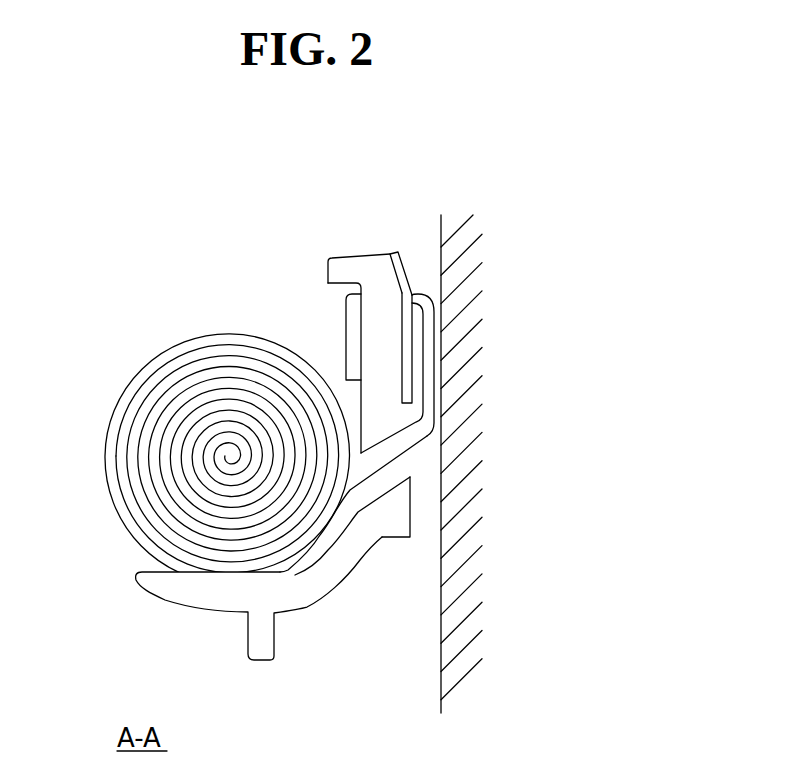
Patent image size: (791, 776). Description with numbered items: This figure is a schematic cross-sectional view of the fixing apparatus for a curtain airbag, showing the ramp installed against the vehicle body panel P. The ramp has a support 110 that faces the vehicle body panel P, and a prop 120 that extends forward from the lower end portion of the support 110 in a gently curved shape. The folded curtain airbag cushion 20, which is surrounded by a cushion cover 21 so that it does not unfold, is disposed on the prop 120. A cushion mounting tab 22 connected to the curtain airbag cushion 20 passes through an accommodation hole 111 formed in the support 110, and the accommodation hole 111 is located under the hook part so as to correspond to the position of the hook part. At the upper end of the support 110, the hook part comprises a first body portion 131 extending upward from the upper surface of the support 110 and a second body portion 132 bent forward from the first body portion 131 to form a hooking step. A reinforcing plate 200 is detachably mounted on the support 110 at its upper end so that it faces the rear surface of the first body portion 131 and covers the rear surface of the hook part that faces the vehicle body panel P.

The curtain airbag cushion 20 is at (162, 477).
The cushion cover 21 is at (163, 357).
The cushion mounting tab 22 is at (437, 352).
The support 110 is at (380, 323).
The accommodation hole 111 is at (384, 493).
The prop 120 is at (182, 592).
The first body portion 131 is at (388, 268).
The second body portion 132 is at (330, 261).
The reinforcing plate 200 is at (407, 256).
The vehicle body panel P is at (440, 667).